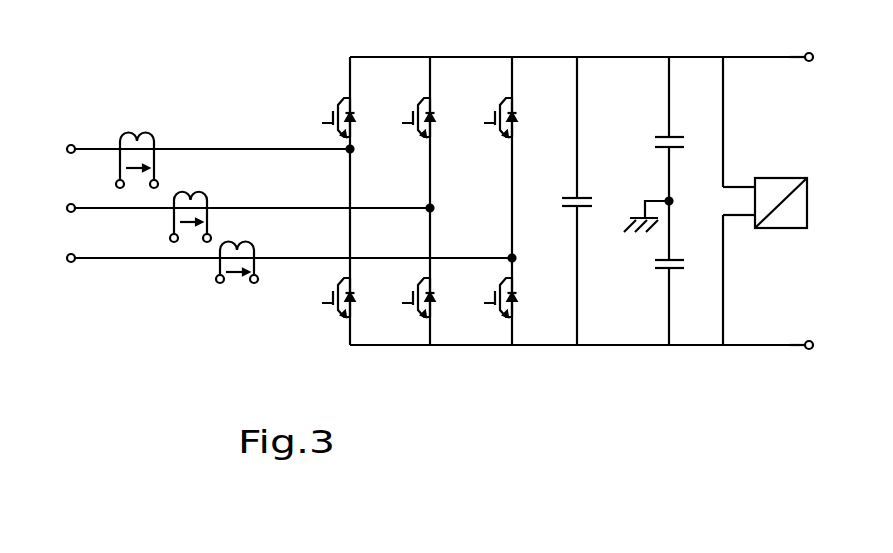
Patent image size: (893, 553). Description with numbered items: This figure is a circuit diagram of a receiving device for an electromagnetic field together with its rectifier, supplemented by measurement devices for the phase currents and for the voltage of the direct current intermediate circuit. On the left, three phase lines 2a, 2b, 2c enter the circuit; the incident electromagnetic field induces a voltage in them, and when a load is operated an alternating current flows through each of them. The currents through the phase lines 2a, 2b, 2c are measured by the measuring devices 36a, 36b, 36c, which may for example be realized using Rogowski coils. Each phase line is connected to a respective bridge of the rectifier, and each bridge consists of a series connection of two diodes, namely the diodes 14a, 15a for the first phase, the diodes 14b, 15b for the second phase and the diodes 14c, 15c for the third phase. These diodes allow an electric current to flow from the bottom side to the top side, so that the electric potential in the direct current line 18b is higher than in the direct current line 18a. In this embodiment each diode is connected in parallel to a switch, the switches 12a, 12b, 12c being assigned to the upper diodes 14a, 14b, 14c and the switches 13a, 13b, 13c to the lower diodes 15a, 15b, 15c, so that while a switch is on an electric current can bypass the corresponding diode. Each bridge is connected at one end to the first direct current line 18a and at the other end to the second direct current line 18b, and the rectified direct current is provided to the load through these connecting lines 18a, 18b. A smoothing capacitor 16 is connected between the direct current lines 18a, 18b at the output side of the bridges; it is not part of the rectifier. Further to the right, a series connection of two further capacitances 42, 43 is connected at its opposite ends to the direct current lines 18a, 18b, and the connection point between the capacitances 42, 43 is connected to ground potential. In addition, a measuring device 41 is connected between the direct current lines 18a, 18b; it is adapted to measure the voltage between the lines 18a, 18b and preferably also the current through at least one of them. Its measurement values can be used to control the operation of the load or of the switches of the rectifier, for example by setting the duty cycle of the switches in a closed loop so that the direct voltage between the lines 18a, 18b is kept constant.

The phase line 2a is at (200, 146).
The phase line 2b is at (235, 206).
The phase line 2c is at (172, 261).
The measuring device 36a is at (118, 160).
The measuring device 36b is at (173, 222).
The measuring device 36c is at (255, 252).
The switch 12a is at (330, 110).
The switch 12b is at (410, 110).
The switch 12c is at (493, 110).
The switch 13a is at (327, 307).
The switch 13b is at (408, 308).
The switch 13c is at (490, 307).
The diode 14a is at (358, 119).
The diode 14b is at (438, 120).
The diode 14c is at (520, 118).
The diode 15a is at (372, 285).
The diode 15b is at (452, 285).
The diode 15c is at (518, 298).
The smoothing capacitor 16 is at (572, 208).
The capacitance 42 is at (662, 270).
The capacitance 43 is at (663, 135).
The measuring device 41 is at (807, 200).
The direct current line 18a is at (758, 58).
The direct current line 18b is at (757, 342).